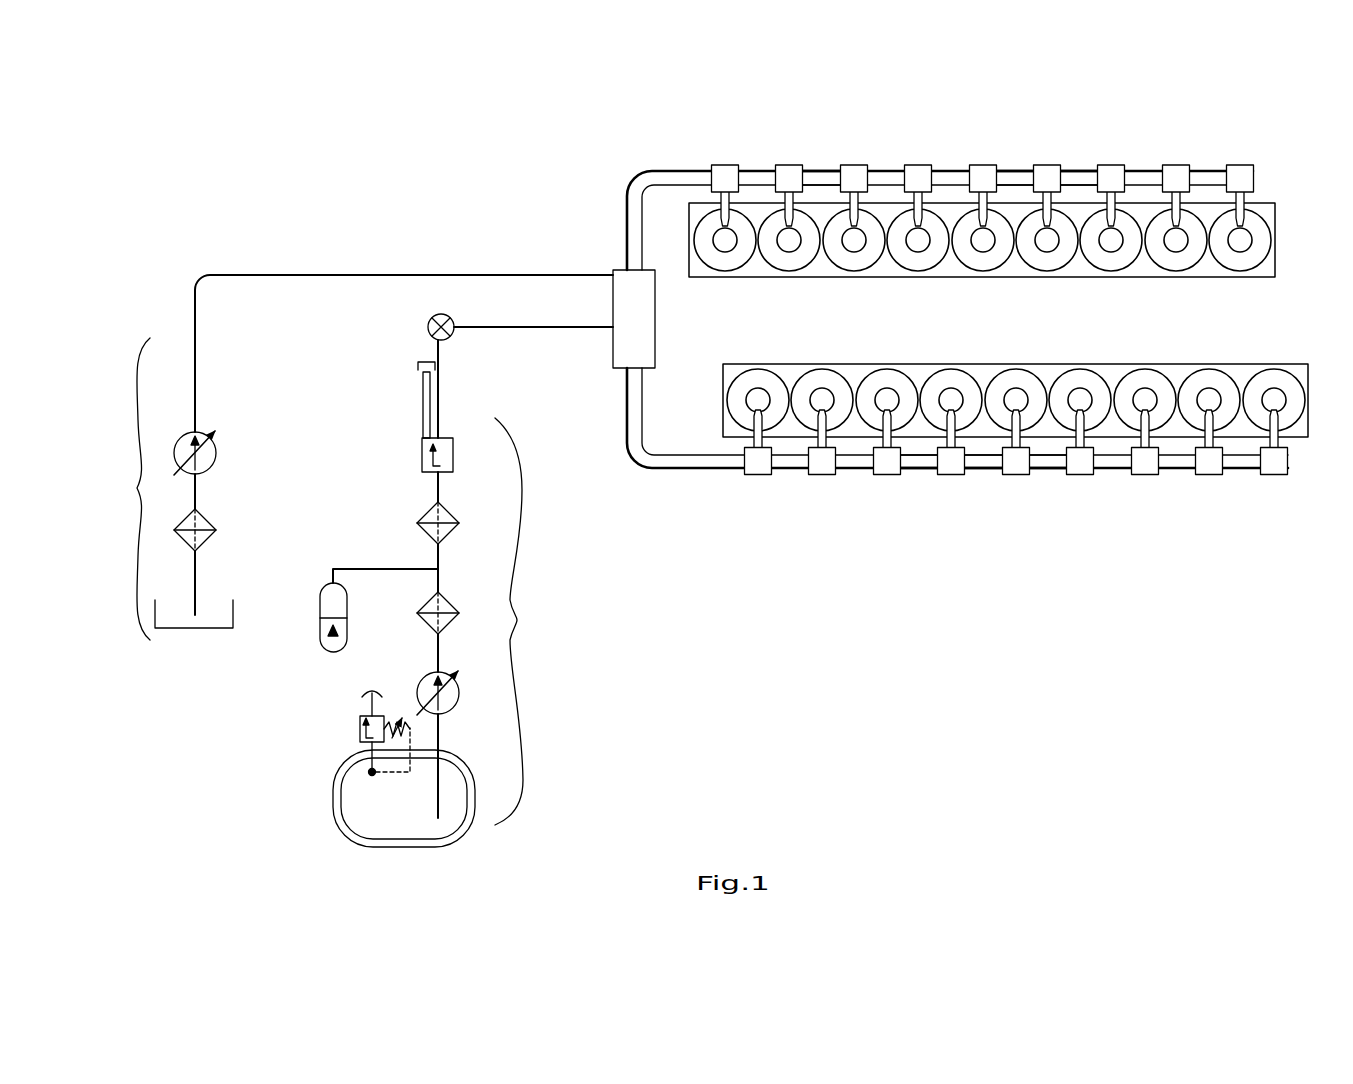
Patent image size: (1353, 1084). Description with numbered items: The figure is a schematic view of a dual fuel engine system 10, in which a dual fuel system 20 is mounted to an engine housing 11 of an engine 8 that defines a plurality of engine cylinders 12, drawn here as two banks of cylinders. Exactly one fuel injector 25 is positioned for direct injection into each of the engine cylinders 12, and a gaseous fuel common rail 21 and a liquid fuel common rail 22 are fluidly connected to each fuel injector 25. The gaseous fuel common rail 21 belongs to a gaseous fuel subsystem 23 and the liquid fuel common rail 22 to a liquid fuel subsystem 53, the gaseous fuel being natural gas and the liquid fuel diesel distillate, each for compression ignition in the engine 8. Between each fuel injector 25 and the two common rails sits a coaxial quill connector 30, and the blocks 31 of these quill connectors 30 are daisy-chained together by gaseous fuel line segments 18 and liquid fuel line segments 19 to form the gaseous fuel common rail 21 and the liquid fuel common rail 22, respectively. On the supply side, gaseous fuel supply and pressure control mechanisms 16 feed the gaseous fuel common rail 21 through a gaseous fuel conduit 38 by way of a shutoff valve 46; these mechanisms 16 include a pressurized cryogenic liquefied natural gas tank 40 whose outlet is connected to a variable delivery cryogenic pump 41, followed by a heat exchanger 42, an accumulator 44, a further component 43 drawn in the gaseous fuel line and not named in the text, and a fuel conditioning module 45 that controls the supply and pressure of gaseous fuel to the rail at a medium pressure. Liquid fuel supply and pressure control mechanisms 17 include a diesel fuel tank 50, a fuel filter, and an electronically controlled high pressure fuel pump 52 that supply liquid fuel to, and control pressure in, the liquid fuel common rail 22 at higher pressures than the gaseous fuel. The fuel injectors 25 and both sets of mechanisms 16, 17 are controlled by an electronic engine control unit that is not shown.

The engine 8 is at (1282, 249).
The dual fuel engine system 10 is at (476, 177).
The engine housing 11 is at (1181, 278).
The engine cylinders 12 is at (776, 263).
The gaseous fuel supply and pressure control mechanisms 16 is at (521, 621).
The liquid fuel supply and pressure control mechanisms 17 is at (131, 489).
The gaseous fuel line segments 18 is at (1008, 190).
The liquid fuel line segments 19 is at (1081, 170).
The dual fuel system 20 is at (963, 140).
The gaseous fuel common rail 21 is at (822, 182).
The liquid fuel common rail 22 is at (1012, 170).
The gaseous fuel subsystem 23 is at (575, 720).
The fuel injector 25 is at (862, 246).
The coaxial quill connector 30 is at (856, 162).
The blocks 31 is at (790, 164).
The gaseous fuel conduit 38 is at (487, 326).
The pressurized cryogenic liquefied natural gas supply or tank 40 is at (477, 768).
The variable delivery cryogenic pump 41 is at (459, 702).
The heat exchanger 42 is at (460, 613).
The filter 43 is at (460, 523).
The accumulator 44 is at (348, 612).
The fuel conditioning module 45 is at (454, 446).
The shutoff valve 46 is at (453, 337).
The diesel fuel supply or tank 50 is at (236, 600).
The electronically controlled high pressure fuel pump 52 is at (215, 460).
The liquid fuel subsystem 53 is at (184, 301).